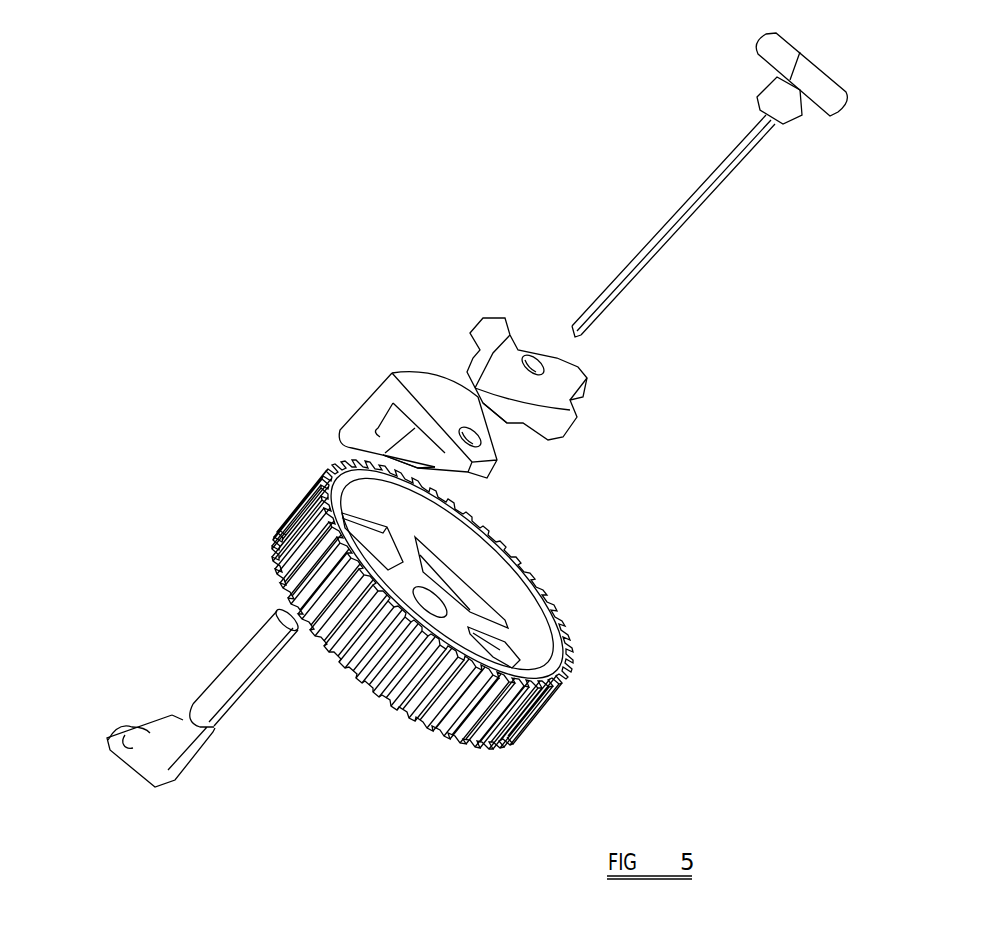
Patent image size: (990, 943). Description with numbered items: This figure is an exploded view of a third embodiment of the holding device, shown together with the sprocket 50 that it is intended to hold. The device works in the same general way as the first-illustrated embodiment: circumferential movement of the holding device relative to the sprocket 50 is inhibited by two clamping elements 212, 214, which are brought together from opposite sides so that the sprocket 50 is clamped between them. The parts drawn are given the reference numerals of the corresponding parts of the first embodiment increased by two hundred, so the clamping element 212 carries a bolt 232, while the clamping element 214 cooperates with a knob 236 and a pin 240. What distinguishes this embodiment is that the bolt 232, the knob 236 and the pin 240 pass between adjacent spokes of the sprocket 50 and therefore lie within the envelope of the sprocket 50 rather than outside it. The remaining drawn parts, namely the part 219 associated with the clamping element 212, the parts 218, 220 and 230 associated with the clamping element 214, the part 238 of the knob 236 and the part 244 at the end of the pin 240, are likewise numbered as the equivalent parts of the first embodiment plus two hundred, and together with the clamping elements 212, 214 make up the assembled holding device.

The sprocket 50 is at (572, 688).
The clamping element 212 is at (158, 792).
The aperture 219 is at (130, 755).
The bolt 232 is at (242, 697).
The clamping element 214 is at (439, 402).
The slot 218 is at (340, 430).
The foot 220 is at (405, 462).
The bore 230 is at (497, 448).
The knob 236 is at (594, 334).
The bore 238 is at (538, 352).
The pin 240 is at (650, 262).
The handle 244 is at (843, 92).